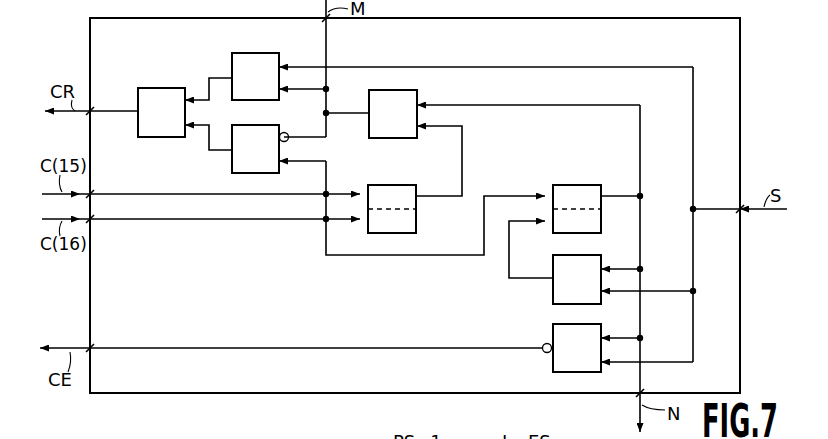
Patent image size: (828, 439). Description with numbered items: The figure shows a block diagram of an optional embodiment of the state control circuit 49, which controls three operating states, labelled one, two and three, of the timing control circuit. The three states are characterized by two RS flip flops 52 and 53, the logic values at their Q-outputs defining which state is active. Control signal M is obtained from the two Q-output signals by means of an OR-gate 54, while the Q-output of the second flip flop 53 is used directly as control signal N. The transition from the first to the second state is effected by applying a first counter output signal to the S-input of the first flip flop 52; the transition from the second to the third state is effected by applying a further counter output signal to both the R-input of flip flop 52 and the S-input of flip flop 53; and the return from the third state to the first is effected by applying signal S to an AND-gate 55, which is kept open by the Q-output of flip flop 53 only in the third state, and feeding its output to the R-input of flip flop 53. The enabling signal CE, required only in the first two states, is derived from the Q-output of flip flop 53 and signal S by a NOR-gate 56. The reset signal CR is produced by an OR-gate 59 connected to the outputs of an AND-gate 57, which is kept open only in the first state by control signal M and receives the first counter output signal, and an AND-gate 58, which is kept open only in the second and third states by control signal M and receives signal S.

The state control circuit 49 is at (550, 18).
The RS flip flop 52 is at (395, 185).
The RS flip flop 53 is at (578, 185).
The OR-gate 54 is at (407, 90).
The AND-gate 55 is at (553, 292).
The NOR-gate 56 is at (553, 338).
The AND-gate 57 is at (268, 173).
The AND-gate 58 is at (258, 53).
The OR-gate 59 is at (161, 88).